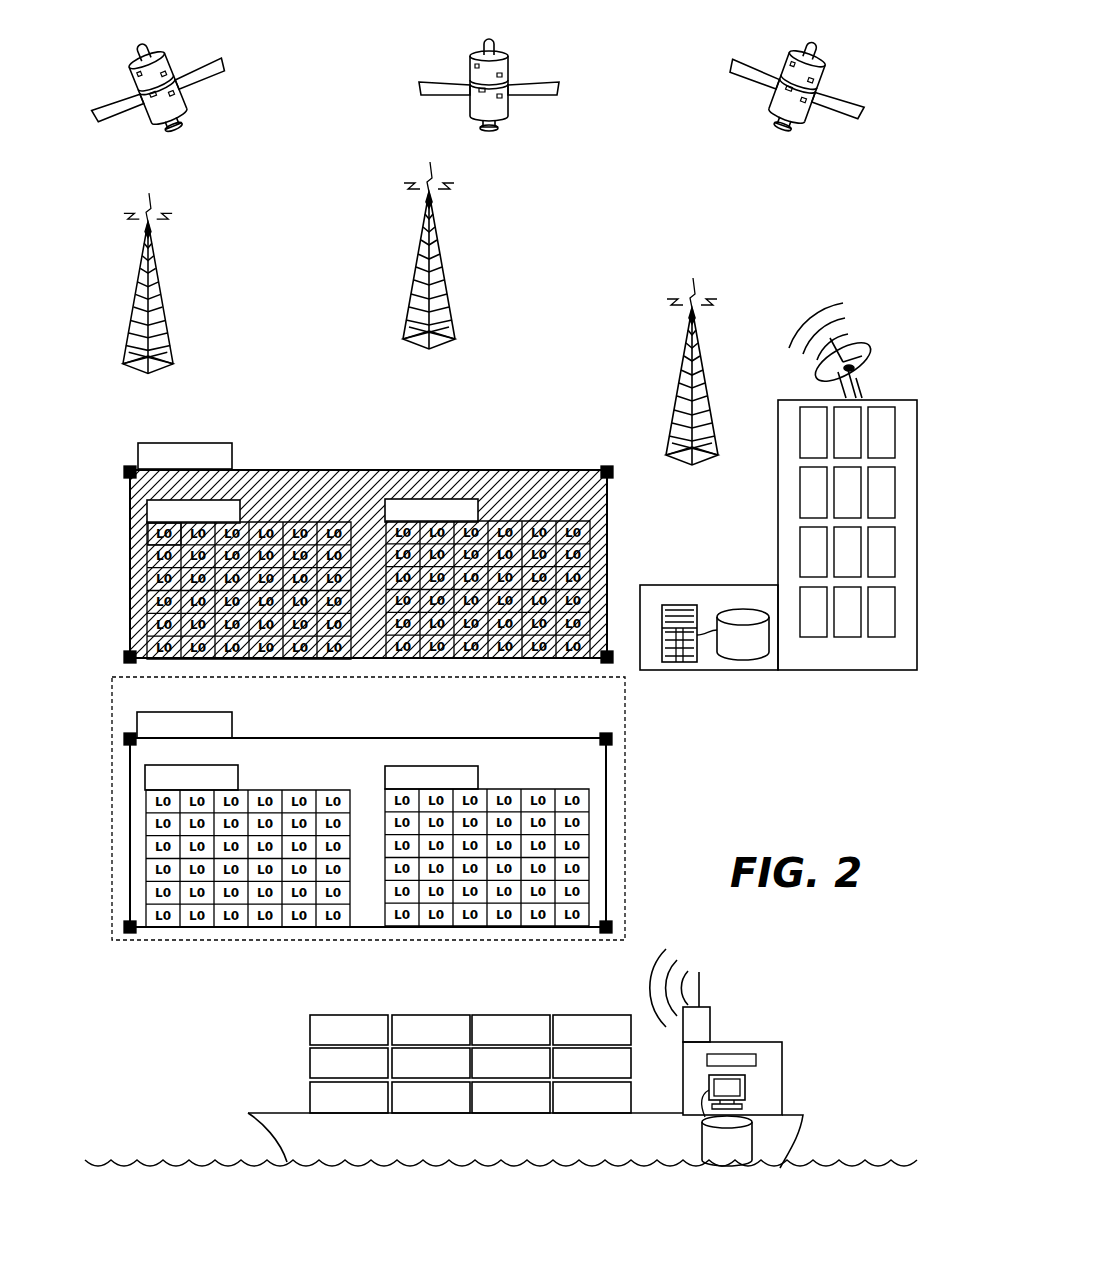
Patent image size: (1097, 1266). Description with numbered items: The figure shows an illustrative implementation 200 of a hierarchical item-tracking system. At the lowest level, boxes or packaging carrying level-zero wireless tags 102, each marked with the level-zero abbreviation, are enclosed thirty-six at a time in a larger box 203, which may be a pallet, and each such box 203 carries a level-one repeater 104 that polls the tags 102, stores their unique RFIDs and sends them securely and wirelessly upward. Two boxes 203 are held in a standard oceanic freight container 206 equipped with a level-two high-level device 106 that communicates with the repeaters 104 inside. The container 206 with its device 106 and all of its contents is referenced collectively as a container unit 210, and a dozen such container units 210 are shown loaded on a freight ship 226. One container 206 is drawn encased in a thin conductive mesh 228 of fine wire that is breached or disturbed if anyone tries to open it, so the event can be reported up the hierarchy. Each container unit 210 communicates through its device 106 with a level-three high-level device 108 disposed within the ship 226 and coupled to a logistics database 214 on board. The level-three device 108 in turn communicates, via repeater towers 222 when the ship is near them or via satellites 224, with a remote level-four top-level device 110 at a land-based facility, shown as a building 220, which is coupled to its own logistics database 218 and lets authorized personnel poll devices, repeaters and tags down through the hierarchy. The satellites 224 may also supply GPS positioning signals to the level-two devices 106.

The Level 0 wireless tag 102 is at (158, 558).
The Level 1 repeater 104 is at (232, 500).
The Level 2 high-level device 106 is at (183, 443).
The Level 3 high-level device 108 is at (745, 1088).
The Level 4 top-level device 110 is at (684, 663).
The implementation 200 is at (608, 295).
The box 203 is at (146, 602).
The container 206 is at (357, 471).
The container unit 210 is at (624, 848).
The logistics database 214 is at (753, 1152).
The logistics database 218 is at (752, 662).
The central facility building 220 is at (778, 560).
The repeater tower 222 is at (162, 310).
The satellite 224 is at (163, 60).
The freight ship 226 is at (262, 1140).
The conductive mesh 228 is at (497, 485).